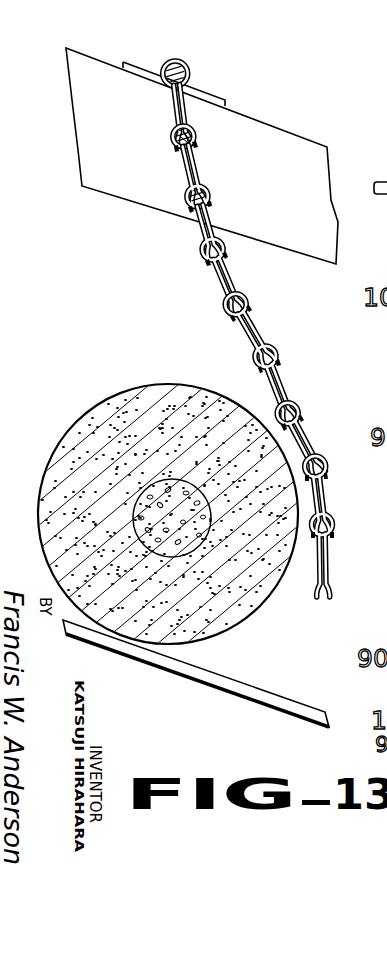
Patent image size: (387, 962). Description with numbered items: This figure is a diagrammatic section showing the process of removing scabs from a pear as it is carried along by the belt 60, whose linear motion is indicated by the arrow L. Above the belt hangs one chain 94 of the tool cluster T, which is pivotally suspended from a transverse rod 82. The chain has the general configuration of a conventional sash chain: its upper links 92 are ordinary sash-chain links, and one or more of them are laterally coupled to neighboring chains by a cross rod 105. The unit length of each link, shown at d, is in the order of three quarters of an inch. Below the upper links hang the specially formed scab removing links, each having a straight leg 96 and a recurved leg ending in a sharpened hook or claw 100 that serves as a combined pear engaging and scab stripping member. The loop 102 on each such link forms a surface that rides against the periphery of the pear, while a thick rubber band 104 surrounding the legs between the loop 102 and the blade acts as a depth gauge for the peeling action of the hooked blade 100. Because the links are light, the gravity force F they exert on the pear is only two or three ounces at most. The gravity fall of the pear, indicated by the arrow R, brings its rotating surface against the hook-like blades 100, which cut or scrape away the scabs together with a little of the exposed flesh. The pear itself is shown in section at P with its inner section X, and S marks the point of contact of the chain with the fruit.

The transverse rod 82 is at (180, 74).
The upper link 92 is at (195, 112).
The chain 94 is at (169, 111).
The cross rod 105 is at (197, 148).
The straight leg 96 is at (301, 446).
The hook or claw 100 is at (243, 340).
The loop 102 is at (262, 371).
The rubber band 104 is at (237, 326).
The belt 60 is at (232, 683).
The unit length of link d is at (150, 190).
The pipe P is at (143, 385).
The pipe cross section X is at (168, 518).
The tool cluster T is at (177, 301).
The arrow indicating gravity fall of the pears R is at (108, 377).
The contact point S is at (290, 462).
The gravity force F is at (355, 560).
The arrow indicating linear motion of the belt L is at (258, 726).